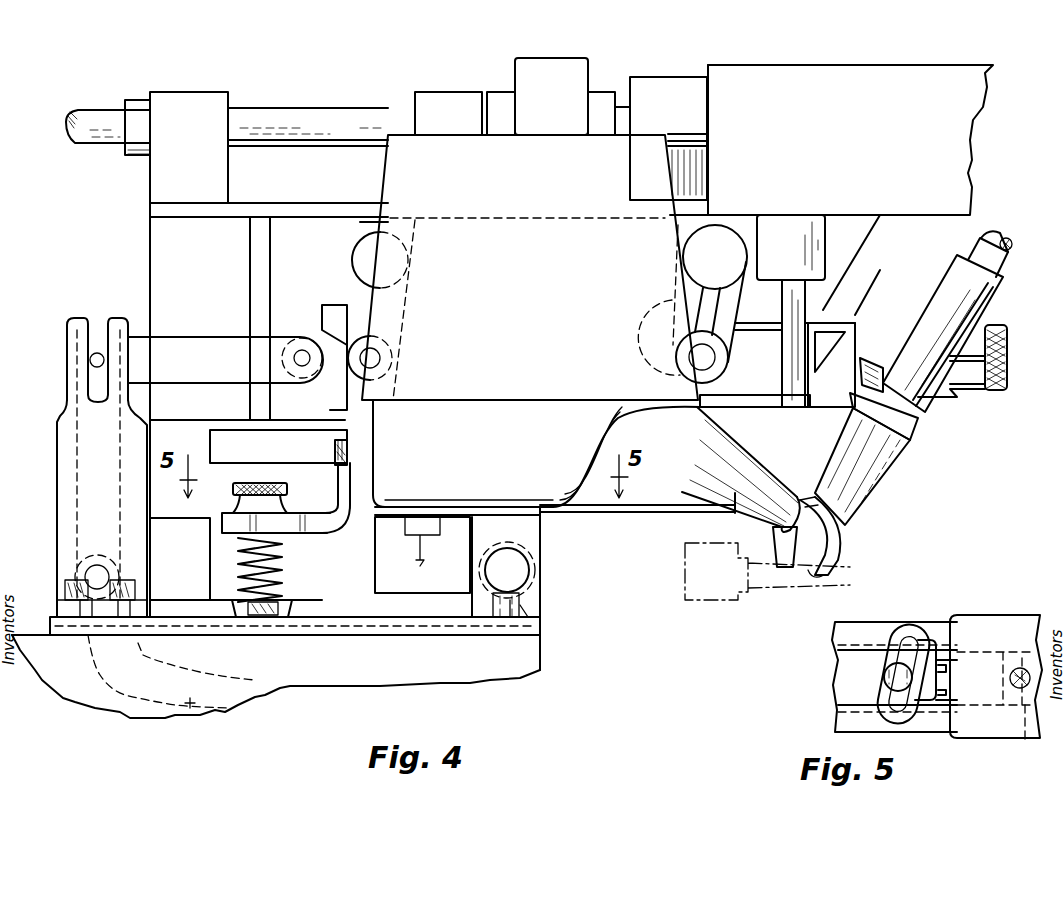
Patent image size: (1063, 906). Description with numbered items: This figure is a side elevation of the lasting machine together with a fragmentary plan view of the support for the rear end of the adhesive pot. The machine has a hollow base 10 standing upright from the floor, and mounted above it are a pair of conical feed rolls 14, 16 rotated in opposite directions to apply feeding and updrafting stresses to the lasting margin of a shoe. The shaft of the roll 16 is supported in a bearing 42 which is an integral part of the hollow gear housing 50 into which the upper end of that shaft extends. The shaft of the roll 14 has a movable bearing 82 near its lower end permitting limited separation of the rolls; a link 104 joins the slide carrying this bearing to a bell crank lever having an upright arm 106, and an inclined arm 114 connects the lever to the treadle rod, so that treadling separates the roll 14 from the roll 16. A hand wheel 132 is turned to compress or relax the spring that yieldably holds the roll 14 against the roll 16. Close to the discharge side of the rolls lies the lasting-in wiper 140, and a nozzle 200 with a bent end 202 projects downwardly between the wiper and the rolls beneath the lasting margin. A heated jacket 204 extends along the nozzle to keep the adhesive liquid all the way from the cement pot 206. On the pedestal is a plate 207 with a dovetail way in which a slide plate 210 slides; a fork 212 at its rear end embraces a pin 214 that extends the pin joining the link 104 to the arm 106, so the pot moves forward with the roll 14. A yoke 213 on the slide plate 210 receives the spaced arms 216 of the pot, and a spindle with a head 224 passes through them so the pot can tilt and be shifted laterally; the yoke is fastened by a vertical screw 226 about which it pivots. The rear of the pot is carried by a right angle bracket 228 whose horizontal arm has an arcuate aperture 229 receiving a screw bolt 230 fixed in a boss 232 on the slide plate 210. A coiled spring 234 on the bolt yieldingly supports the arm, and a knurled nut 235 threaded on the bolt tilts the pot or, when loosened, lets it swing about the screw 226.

In FIG. 4, the hollow base 10 is at (497, 699).
In FIG. 4, the roll 14 is at (834, 551).
In FIG. 4, the roll 16 is at (773, 543).
In FIG. 4, the bearing 42 is at (828, 250).
In FIG. 4, the hollow gear housing 50 is at (793, 73).
In FIG. 4, the movable bearing 82 is at (900, 464).
In FIG. 4, the link 104 is at (157, 337).
In FIG. 4, the upright arm 106 is at (75, 428).
In FIG. 4, the inclined arm 114 is at (193, 705).
In FIG. 4, the hand wheel 132 is at (1022, 372).
In FIG. 4, the lasting-in wiper 140 is at (728, 600).
In FIG. 4, the nozzle 200 is at (860, 520).
In FIG. 4, the bent end 202 is at (824, 575).
In FIG. 4, the heated jacket 204 is at (728, 507).
In FIG. 4, the cement pot 206 is at (390, 180).
In FIG. 5, the cement pot 206 is at (1003, 625).
In FIG. 5, the plate 207 is at (840, 640).
In FIG. 4, the slide plate 210 is at (540, 623).
In FIG. 5, the slide plate 210 is at (840, 668).
In FIG. 4, the fork 212 is at (68, 485).
In FIG. 4, the yoke 213 is at (535, 617).
In FIG. 5, the yoke 213 is at (1018, 652).
In FIG. 4, the pin 214 is at (90, 360).
In FIG. 4, the arms 216 is at (542, 545).
In FIG. 4, the head 224 is at (528, 570).
In FIG. 4, the vertical screw 226 is at (530, 622).
In FIG. 5, the vertical screw 226 is at (1025, 740).
In FIG. 4, the right angle bracket 228 is at (346, 522).
In FIG. 5, the right angle bracket 228 is at (930, 705).
In FIG. 4, the aperture 229 is at (225, 530).
In FIG. 5, the aperture 229 is at (903, 632).
In FIG. 4, the screw bolt 230 is at (251, 607).
In FIG. 4, the boss 232 is at (300, 614).
In FIG. 4, the coiled spring 234 is at (285, 577).
In FIG. 4, the knurled nut 235 is at (287, 496).
In FIG. 5, the knurled nut 235 is at (893, 685).